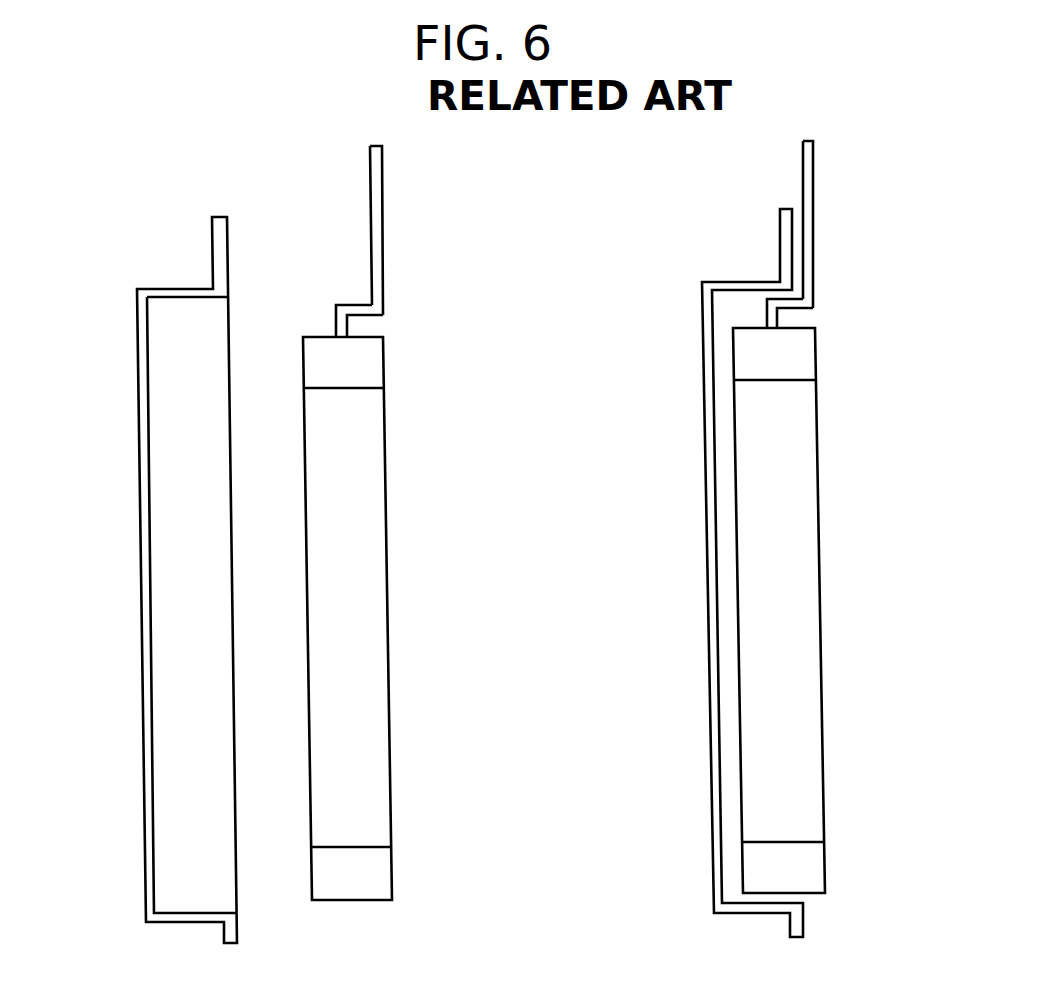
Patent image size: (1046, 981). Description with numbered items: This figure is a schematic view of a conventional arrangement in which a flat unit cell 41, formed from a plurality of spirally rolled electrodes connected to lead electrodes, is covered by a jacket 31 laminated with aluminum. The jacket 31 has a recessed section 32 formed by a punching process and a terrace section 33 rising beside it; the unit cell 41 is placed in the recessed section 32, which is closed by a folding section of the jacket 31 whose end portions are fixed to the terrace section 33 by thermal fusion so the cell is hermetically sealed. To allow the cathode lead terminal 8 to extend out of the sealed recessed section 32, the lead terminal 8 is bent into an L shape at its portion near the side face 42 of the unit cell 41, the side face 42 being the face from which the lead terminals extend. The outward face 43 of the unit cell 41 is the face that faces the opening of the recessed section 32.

The cathode lead terminal 8 is at (385, 236).
The jacket 31 is at (147, 750).
The recessed section 32 is at (183, 867).
The terrace section 33 is at (228, 257).
The unit cell 41 is at (353, 477).
The side face 42 is at (362, 333).
The outward face 43 is at (390, 687).